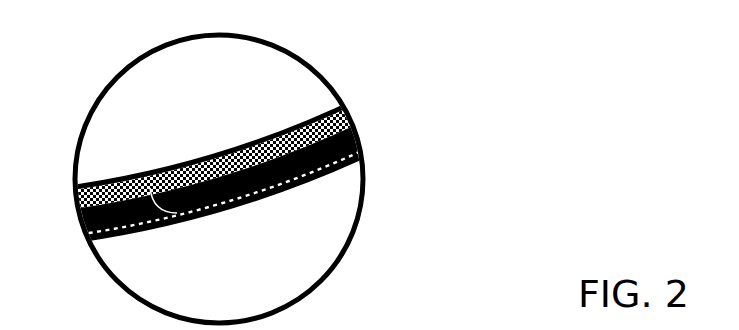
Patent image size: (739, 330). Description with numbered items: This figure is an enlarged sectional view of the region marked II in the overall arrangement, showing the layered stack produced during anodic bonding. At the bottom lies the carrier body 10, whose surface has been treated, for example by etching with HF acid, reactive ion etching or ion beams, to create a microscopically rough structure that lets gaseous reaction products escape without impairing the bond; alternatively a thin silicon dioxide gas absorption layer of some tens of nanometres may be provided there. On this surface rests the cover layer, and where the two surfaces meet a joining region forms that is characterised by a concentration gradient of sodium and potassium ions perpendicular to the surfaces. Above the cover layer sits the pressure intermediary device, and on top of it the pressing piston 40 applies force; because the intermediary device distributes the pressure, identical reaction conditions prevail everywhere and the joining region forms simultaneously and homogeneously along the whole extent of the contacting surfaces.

The carrier body 10 is at (155, 272).
The pressing piston 40 is at (290, 73).
The section II indicator II is at (353, 263).